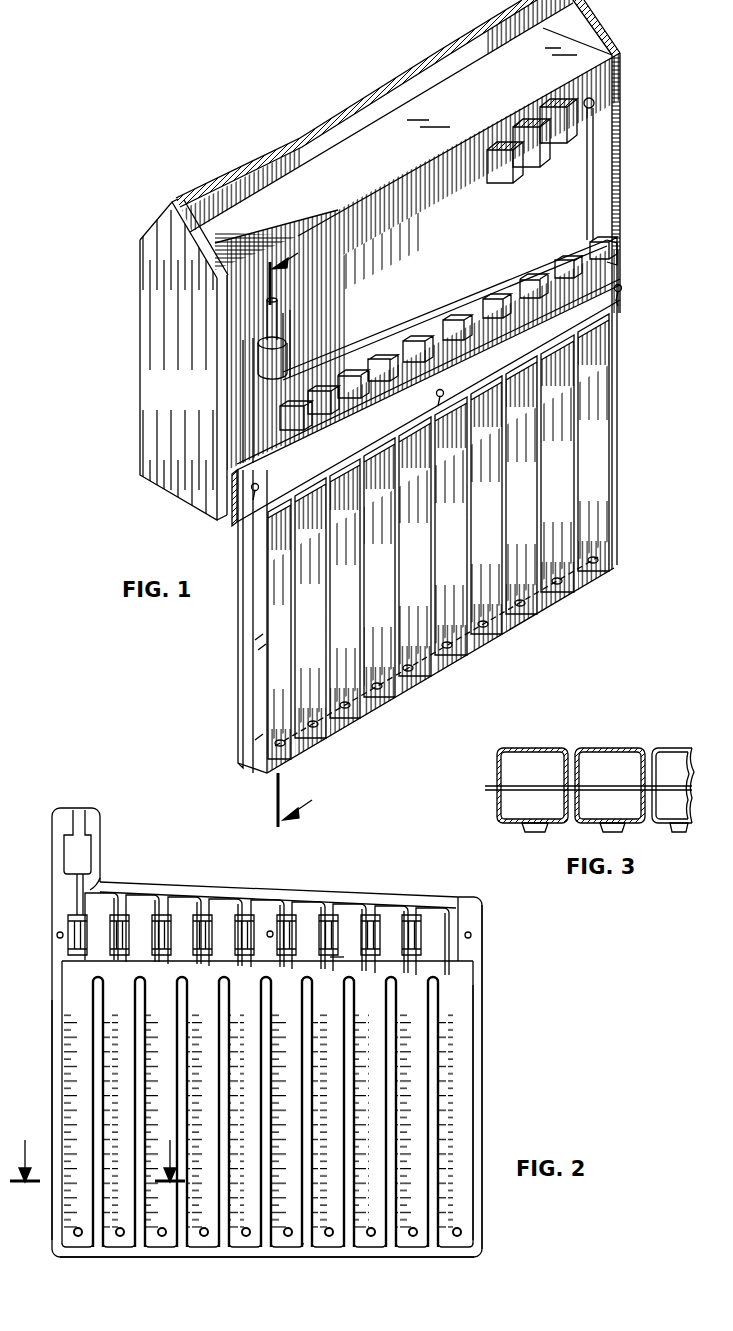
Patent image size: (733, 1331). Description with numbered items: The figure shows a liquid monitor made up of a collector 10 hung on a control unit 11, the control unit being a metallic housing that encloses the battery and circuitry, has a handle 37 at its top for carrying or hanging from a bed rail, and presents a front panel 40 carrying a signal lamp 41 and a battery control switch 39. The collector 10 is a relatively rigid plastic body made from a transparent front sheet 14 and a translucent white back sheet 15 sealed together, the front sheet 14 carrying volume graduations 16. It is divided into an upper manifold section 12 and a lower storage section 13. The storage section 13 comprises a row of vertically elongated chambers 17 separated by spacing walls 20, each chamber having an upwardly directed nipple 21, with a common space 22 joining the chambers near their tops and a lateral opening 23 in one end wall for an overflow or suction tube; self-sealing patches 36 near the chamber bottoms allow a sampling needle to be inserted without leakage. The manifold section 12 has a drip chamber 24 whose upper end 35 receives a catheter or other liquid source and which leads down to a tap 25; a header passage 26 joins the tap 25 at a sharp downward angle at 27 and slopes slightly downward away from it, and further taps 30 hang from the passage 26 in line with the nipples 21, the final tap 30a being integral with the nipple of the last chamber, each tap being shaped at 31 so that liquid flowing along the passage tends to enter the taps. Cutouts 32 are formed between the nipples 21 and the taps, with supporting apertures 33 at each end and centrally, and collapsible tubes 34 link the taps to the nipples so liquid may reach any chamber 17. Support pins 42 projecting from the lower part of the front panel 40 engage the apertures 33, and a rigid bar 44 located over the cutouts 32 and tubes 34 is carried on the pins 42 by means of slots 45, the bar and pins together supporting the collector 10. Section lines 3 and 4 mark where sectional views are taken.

In FIG. 2, the section line 3— 3 is at (97, 1150).
In FIG. 1, the section line 4— 4 is at (298, 536).
In FIG. 1, the collector 10 is at (622, 431).
In FIG. 2, the collector 10 is at (490, 1061).
In FIG. 1, the control unit 11 is at (626, 144).
In FIG. 2, the manifold section 12 is at (480, 915).
In FIG. 1, the storage section 13 is at (598, 395).
In FIG. 2, the storage section 13 is at (482, 1126).
In FIG. 1, the front sheet 14 is at (602, 513).
In FIG. 2, the front sheet 14 is at (62, 1201).
In FIG. 3, the front sheet 14 is at (516, 826).
In FIG. 1, the back sheet 15 is at (256, 667).
In FIG. 3, the back sheet 15 is at (623, 749).
In FIG. 2, the volume graduations 16 is at (65, 1040).
In FIG. 1, the chambers 17 is at (616, 460).
In FIG. 2, the chambers 17 is at (464, 1203).
In FIG. 2, the spacing walls 20 is at (430, 1246).
In FIG. 2, the nipples 21 is at (335, 962).
In FIG. 2, the common space 22 is at (147, 966).
In FIG. 2, the lateral opening 23 is at (475, 967).
In FIG. 1, the drip chamber 24 is at (260, 364).
In FIG. 2, the drip chamber 24 is at (72, 852).
In FIG. 2, the tap 25 is at (75, 903).
In FIG. 2, the header passage 26 is at (165, 890).
In FIG. 2, the sharp downward angle 27 is at (97, 880).
In FIG. 2, the further taps 30 is at (255, 905).
In FIG. 2, the final tap 30a is at (457, 906).
In FIG. 2, the tap formation 31 is at (325, 905).
In FIG. 2, the cutouts 32 is at (380, 928).
In FIG. 2, the supporting apertures 33 is at (272, 932).
In FIG. 2, the collapsible tubes 34 is at (248, 937).
In FIG. 2, the upper end of drip chamber 35 is at (80, 805).
In FIG. 1, the self-sealing patches 36 is at (598, 563).
In FIG. 2, the self-sealing patches 36 is at (462, 1232).
In FIG. 3, the self-sealing patches 36 is at (627, 828).
In FIG. 1, the handle 37 is at (376, 89).
In FIG. 1, the battery control switch 39 is at (546, 110).
In FIG. 1, the front panel 40 is at (454, 251).
In FIG. 1, the signal lamp 41 is at (594, 103).
In FIG. 1, the support pins 42 is at (253, 492).
In FIG. 1, the bar 44 is at (394, 430).
In FIG. 1, the slots 45 is at (619, 297).